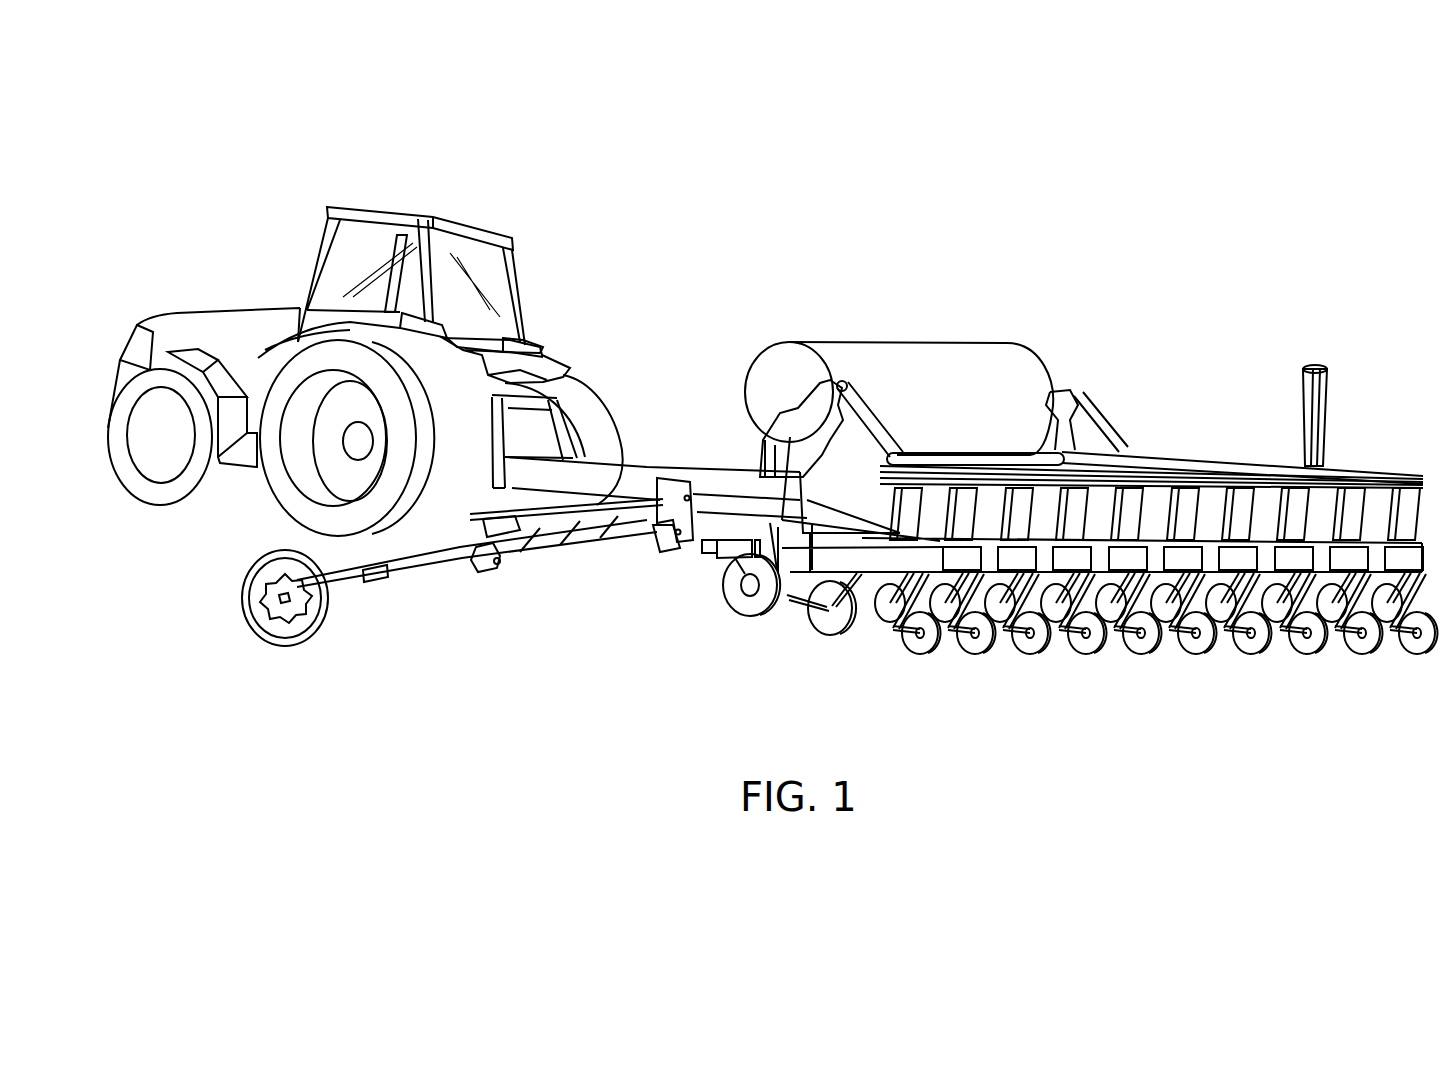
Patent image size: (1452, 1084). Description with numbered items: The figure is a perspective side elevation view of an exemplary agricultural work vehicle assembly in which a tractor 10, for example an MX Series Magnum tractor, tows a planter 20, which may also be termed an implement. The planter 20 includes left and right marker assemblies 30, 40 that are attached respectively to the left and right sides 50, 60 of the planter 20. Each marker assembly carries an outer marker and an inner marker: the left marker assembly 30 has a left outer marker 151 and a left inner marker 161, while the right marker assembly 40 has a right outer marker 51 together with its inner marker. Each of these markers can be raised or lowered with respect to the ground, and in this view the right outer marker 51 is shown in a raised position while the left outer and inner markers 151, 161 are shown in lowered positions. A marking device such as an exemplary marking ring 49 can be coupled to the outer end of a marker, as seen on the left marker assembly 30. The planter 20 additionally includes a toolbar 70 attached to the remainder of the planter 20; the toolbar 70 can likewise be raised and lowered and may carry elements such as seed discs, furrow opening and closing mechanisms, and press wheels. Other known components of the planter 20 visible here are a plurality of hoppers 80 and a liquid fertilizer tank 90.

The tractor 10 is at (505, 207).
The planter 20 is at (1100, 283).
The left marker assembly 30 is at (455, 595).
The right marker assembly 40 is at (1345, 372).
The marking ring 49 is at (310, 645).
The left side of the planter 50 is at (778, 632).
The right outer marker 51 is at (1342, 400).
The right side of the planter 60 is at (1427, 662).
The toolbar 70 is at (1057, 657).
The hoppers 80 is at (1292, 466).
The liquid fertilizer tank 90 is at (918, 318).
The left outer marker 151 is at (380, 615).
The left inner marker 161 is at (707, 573).